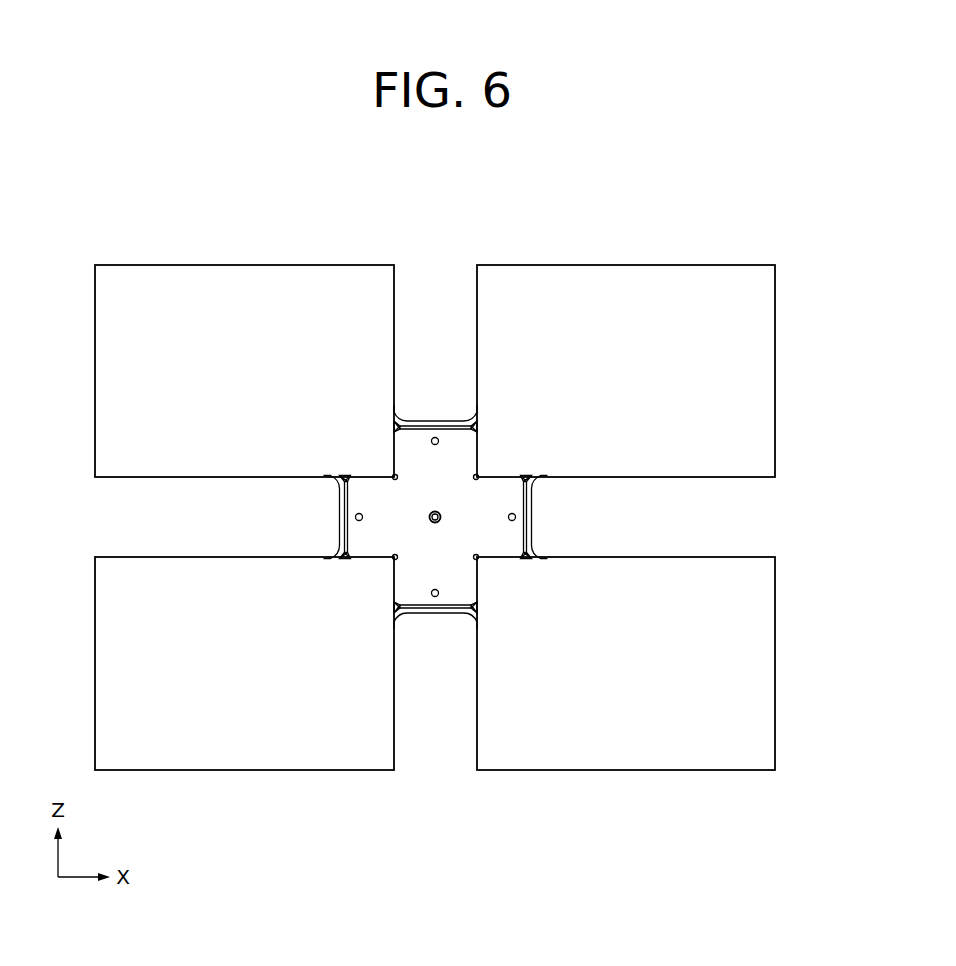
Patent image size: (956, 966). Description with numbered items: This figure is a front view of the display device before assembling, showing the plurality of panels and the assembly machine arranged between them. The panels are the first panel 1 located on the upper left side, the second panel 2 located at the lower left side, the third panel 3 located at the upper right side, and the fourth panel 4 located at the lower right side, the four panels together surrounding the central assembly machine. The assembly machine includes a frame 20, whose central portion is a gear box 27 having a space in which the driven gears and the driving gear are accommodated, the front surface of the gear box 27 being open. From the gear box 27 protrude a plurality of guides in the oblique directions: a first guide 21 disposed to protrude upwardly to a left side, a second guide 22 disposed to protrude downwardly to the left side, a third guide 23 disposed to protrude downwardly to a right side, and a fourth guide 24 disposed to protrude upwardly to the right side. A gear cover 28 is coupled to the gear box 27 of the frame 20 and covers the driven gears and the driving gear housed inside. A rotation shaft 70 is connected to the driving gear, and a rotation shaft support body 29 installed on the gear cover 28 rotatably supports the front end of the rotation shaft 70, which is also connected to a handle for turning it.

The first panel 1 is at (745, 372).
The second panel 2 is at (745, 660).
The third panel 3 is at (125, 370).
The fourth panel 4 is at (125, 660).
The frame 20 is at (435, 301).
The first guide 21 is at (466, 415).
The second guide 22 is at (536, 552).
The third guide 23 is at (342, 552).
The fourth guide 24 is at (406, 415).
The gear box 27 is at (434, 420).
The gear cover 28 is at (480, 510).
The rotation shaft support body 29 is at (437, 523).
The rotation shaft 70 is at (433, 523).